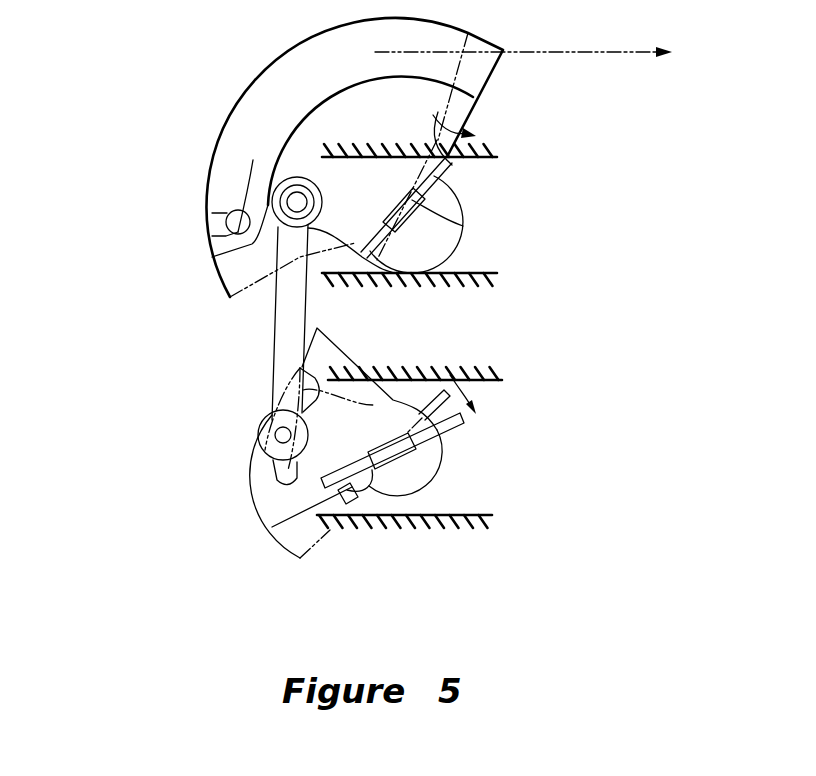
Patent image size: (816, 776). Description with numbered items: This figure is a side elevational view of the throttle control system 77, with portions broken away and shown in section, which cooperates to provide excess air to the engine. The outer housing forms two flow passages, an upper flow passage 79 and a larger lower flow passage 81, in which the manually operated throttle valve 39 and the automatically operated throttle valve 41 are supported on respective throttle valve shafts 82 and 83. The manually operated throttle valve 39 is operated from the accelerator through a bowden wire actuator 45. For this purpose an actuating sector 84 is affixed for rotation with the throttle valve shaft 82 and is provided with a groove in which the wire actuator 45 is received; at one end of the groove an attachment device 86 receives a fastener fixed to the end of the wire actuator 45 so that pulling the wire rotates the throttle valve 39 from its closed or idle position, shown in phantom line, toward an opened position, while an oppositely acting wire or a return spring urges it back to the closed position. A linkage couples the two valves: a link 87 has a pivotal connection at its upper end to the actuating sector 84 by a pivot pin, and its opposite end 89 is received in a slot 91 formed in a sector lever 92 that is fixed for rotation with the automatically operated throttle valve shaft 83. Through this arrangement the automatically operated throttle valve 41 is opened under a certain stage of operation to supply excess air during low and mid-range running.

The throttle control system 77 is at (158, 379).
The actuating sector 84 is at (303, 52).
The attachment device 86 is at (215, 252).
The bowden wire actuator 45 is at (597, 52).
The flow passage 79 is at (455, 162).
The throttle valve shaft 82 is at (410, 200).
The manually operated throttle valve 39 is at (462, 196).
The end of link 89 is at (300, 202).
The link 87 is at (287, 310).
The sector lever 92 is at (255, 408).
The slot 91 is at (270, 490).
The throttle valve shaft 83 is at (387, 455).
The automatically operated throttle valve 41 is at (455, 422).
The flow passage 81 is at (474, 517).